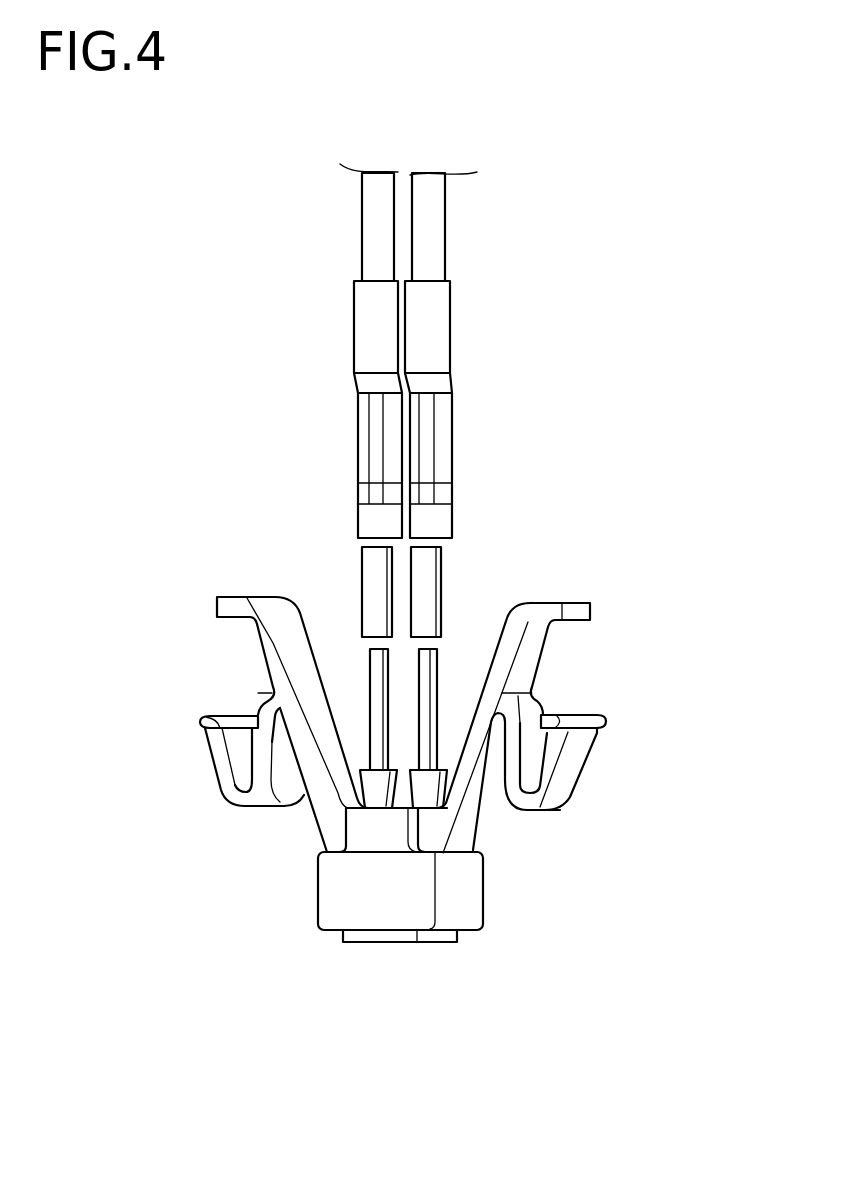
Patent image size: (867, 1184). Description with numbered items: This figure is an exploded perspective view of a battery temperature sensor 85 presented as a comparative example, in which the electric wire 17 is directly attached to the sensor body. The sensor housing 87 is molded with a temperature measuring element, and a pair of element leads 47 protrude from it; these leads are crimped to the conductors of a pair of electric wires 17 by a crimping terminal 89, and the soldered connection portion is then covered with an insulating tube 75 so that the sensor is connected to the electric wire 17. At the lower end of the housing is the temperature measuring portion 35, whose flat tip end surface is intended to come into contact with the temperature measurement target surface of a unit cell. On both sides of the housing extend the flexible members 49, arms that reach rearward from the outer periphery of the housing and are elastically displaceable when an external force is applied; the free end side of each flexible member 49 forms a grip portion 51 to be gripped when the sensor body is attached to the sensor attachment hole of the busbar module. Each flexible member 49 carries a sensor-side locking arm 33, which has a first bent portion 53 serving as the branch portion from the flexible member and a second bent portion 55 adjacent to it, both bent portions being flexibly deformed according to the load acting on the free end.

The electric wire 17 is at (367, 228).
The sensor-side locking arm 33 is at (196, 756).
The temperature measuring portion 35 is at (404, 950).
The lead 47 is at (373, 692).
The flexible member 49 is at (268, 658).
The grip portion 51 is at (242, 597).
The first bent portion 53 is at (255, 696).
The second bent portion 55 is at (267, 807).
The insulating tube 75 is at (370, 325).
The battery temperature sensor 85 is at (207, 405).
The sensor housing 87 is at (345, 898).
The crimping terminal 89 is at (370, 588).